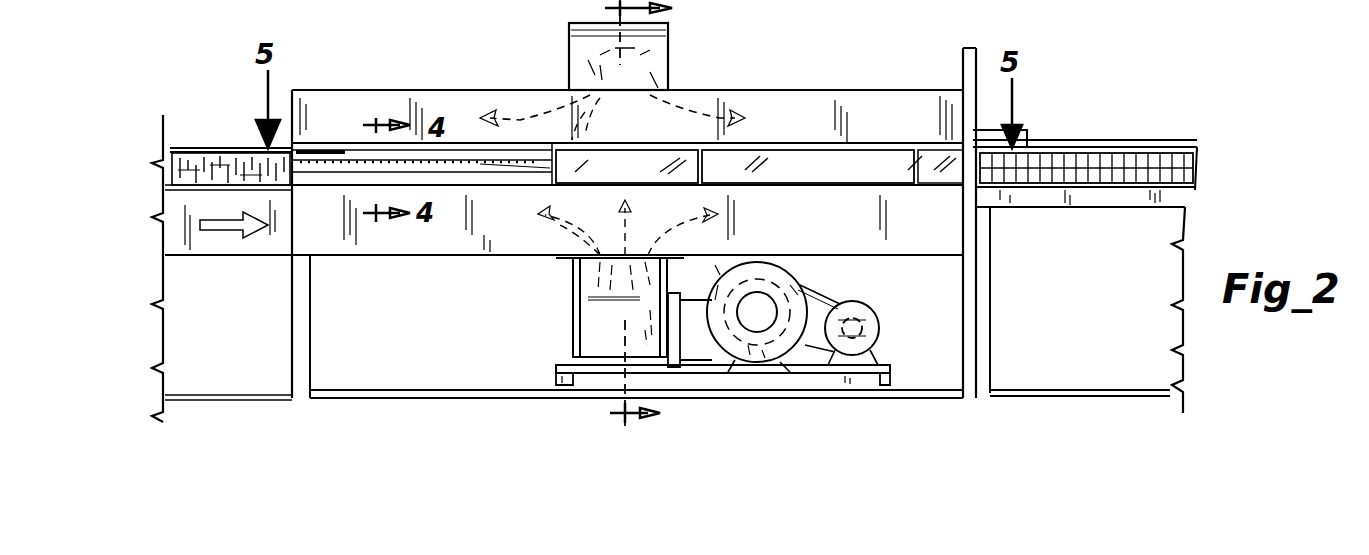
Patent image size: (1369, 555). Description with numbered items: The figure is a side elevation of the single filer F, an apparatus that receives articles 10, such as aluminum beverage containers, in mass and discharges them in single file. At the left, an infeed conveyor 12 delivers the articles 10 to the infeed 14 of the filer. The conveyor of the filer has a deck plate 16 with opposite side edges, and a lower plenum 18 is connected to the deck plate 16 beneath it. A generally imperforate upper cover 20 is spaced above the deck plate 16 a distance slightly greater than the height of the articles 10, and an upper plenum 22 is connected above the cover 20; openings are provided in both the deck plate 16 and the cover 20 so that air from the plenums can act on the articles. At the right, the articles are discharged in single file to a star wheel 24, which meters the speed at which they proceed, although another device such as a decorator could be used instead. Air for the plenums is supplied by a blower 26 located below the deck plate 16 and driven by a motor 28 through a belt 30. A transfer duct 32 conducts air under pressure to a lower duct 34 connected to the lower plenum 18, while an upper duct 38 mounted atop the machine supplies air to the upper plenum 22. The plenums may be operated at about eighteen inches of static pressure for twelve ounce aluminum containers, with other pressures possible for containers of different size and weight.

The articles 10 is at (238, 163).
The infeed conveyor 12 is at (188, 173).
The infeed 14 is at (280, 145).
The deck plate 16 is at (826, 190).
The lower plenum 18 is at (470, 240).
The upper cover 20 is at (750, 143).
The upper plenum 22 is at (803, 107).
The star wheel 24 is at (1027, 133).
The blower 26 is at (775, 268).
The motor 28 is at (882, 322).
The belt 30 is at (822, 303).
The transfer duct 32 is at (693, 333).
The lower duct 34 is at (577, 328).
The upper duct 38 is at (580, 40).
The single filer F is at (722, 67).